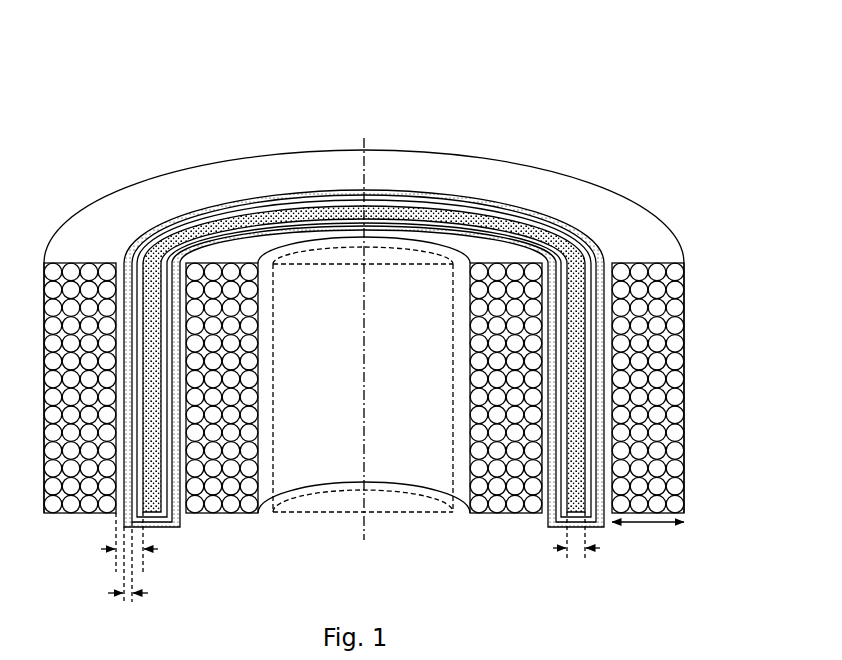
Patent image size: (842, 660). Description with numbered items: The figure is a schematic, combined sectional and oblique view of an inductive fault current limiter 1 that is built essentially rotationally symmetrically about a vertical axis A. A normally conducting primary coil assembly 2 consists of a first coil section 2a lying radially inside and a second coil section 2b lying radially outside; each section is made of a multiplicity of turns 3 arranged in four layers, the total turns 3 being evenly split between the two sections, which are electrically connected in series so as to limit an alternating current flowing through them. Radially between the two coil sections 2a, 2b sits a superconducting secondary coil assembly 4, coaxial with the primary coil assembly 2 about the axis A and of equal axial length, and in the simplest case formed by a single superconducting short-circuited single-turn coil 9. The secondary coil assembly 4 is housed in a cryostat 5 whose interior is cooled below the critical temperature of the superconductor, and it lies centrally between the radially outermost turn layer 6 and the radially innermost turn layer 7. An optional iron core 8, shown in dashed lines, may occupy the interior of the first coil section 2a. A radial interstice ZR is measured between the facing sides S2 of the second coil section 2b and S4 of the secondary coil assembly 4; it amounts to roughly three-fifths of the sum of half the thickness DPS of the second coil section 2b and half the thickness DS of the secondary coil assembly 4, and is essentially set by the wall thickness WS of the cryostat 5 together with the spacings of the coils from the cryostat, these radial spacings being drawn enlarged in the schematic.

The fault current limiter 1 is at (614, 126).
The primary coil assembly 2 is at (364, 371).
The first coil section 2a is at (214, 272).
The second coil section 2b is at (88, 274).
The turns 3 is at (262, 500).
The secondary coil assembly 4 is at (150, 495).
The cryostat 5 is at (130, 265).
The radially outermost turn layer 6 is at (53, 258).
The radially innermost turn layer 7 is at (248, 258).
The iron core 8 is at (386, 498).
The single-turn coil 9 is at (153, 264).
The axis A is at (368, 158).
The side of the second coil section S2 is at (111, 486).
The side of the secondary coil assembly S4 is at (152, 483).
The interstice ZR is at (124, 543).
The wall thickness WS is at (122, 570).
The thickness of the secondary coil assembly DS is at (576, 548).
The thickness of the second coil section DPS is at (648, 539).